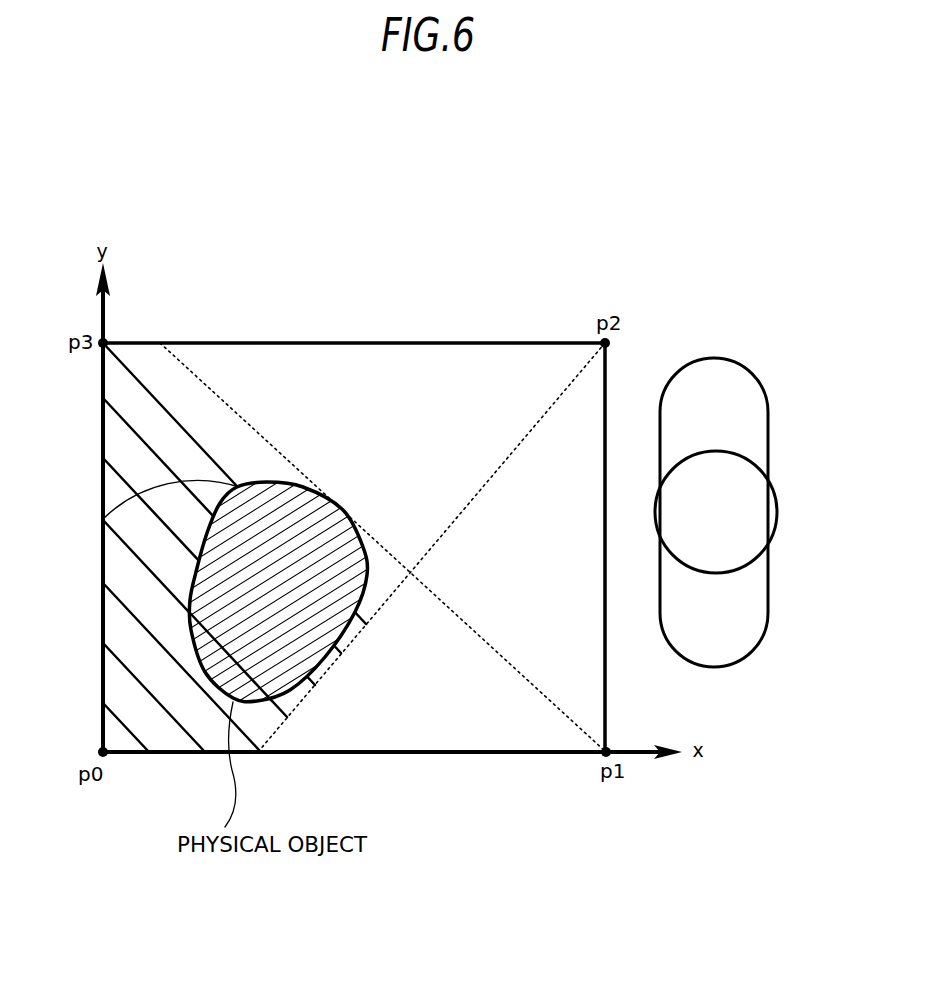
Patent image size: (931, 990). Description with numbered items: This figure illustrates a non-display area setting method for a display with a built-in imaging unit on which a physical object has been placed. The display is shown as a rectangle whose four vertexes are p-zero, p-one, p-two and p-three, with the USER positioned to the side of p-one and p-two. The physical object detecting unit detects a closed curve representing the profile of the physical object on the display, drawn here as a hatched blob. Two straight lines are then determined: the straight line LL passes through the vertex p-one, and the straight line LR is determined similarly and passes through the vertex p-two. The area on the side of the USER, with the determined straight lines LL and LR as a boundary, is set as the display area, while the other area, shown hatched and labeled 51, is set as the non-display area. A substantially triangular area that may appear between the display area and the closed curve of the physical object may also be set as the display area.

The occluded region of display 51 is at (192, 407).
The straight line L_R LR is at (562, 385).
The straight line L_L LL is at (555, 705).
The user USER is at (728, 358).